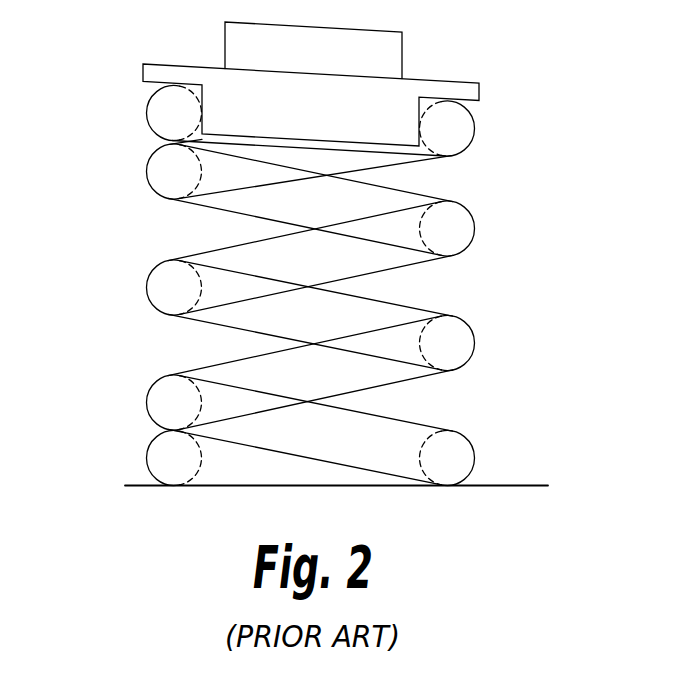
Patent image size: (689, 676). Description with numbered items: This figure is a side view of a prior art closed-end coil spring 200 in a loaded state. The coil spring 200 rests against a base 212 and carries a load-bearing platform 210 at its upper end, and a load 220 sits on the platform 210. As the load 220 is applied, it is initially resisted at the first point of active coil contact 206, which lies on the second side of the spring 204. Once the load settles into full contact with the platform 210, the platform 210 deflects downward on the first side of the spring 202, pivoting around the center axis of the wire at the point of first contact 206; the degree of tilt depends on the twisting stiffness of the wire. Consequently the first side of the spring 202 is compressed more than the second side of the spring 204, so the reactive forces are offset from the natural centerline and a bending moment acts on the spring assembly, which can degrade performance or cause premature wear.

The coil spring 200 is at (472, 237).
The first side of the spring 202 is at (455, 255).
The second side of the spring 204 is at (147, 288).
The point of first contact 206 is at (158, 87).
The load-bearing platform 210 is at (479, 90).
The base 212 is at (512, 485).
The load 220 is at (402, 55).